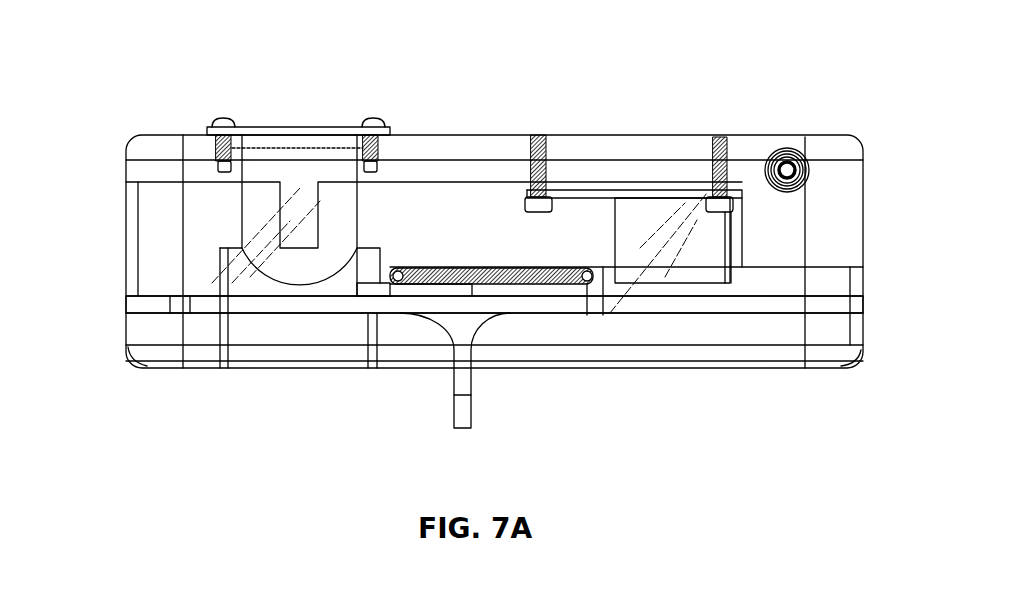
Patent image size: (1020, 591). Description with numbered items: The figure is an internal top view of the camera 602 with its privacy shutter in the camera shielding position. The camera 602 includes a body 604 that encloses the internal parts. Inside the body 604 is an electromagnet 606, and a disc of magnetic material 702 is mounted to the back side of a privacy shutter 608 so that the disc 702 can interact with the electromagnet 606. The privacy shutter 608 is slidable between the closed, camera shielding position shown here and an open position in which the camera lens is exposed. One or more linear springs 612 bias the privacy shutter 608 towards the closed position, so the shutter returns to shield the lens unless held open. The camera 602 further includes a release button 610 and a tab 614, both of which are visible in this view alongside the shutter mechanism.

The camera 602 is at (147, 35).
The body 604 is at (840, 137).
The electromagnet 606 is at (698, 249).
The privacy shutter 608 is at (238, 303).
The release button 610 is at (780, 157).
The linear spring 612 is at (457, 270).
The tab 614 is at (455, 399).
The disc of magnetic material 702 is at (380, 288).